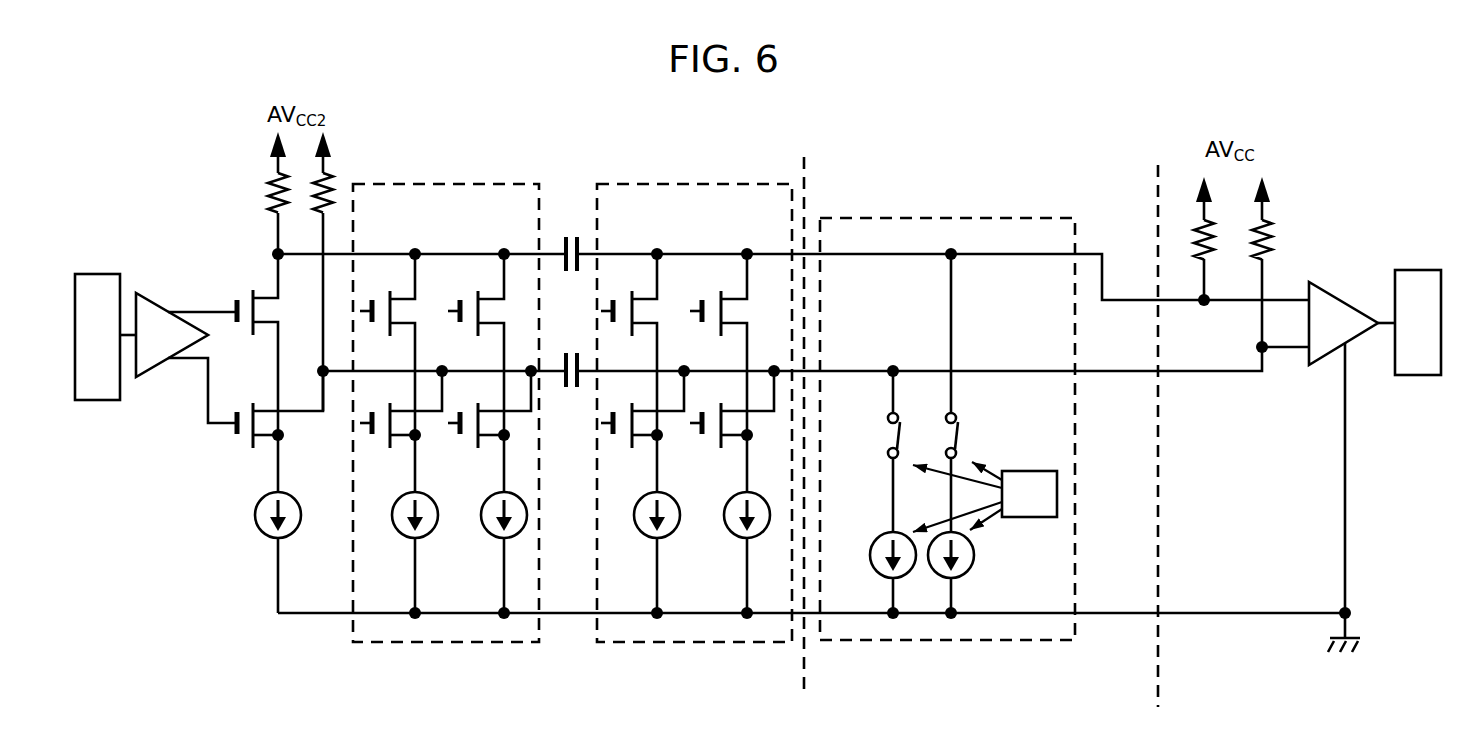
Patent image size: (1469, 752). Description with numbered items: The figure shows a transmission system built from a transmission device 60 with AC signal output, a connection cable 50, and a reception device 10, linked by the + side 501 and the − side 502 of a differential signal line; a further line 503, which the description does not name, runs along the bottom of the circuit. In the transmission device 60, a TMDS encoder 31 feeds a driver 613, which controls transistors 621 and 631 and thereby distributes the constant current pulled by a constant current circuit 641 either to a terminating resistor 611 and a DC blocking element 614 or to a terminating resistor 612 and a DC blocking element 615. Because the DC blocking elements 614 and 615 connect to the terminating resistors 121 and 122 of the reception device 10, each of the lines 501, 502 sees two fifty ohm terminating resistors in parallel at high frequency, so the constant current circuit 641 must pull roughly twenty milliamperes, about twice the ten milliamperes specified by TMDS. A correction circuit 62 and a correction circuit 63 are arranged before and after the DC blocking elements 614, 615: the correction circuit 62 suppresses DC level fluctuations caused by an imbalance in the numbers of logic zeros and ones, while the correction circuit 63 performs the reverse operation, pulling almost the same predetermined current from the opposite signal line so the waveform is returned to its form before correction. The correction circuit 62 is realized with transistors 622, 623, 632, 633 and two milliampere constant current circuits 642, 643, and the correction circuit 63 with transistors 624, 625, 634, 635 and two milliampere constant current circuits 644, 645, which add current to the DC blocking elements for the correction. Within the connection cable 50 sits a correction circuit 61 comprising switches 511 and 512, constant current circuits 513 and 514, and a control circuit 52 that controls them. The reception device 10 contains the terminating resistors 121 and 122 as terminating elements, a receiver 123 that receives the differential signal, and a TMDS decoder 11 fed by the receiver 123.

The TMDS decoder 11 is at (1424, 271).
The TMDS encoder 31 is at (93, 274).
The driver 613 is at (163, 362).
The terminating resistor 611 is at (267, 180).
The terminating resistor 612 is at (337, 163).
The transistor 621 is at (245, 290).
The transistor 631 is at (244, 449).
The constant current circuit 641 is at (259, 533).
The correction circuit 62 is at (455, 184).
The transistor 622 is at (382, 288).
The transistor 623 is at (470, 288).
The transistor 632 is at (382, 446).
The transistor 633 is at (464, 447).
The constant current circuit 642 is at (396, 534).
The constant current circuit 643 is at (488, 533).
The DC blocking element 614 is at (572, 233).
The DC blocking element 615 is at (572, 349).
The correction circuit 63 is at (678, 184).
The transistor 624 is at (622, 288).
The transistor 625 is at (712, 288).
The transistor 634 is at (624, 446).
The transistor 635 is at (707, 447).
The constant current circuit 644 is at (634, 533).
The constant current circuit 645 is at (731, 533).
The + side of the differential signal line 501 is at (1013, 257).
The − side of the differential signal line 502 is at (1010, 375).
The ground line 503 is at (1076, 611).
The correction circuit 61 is at (950, 218).
The switch 511 is at (958, 426).
The switch 512 is at (888, 437).
The constant current circuit 513 is at (985, 560).
The constant current circuit 514 is at (868, 549).
The control circuit 52 is at (985, 497).
The terminating resistor 121 is at (1188, 228).
The terminating resistor 122 is at (1286, 229).
The receiver 123 is at (1358, 347).
The transmission device 60 is at (790, 667).
The connection cable 50 is at (1144, 667).
The reception device 10 is at (1172, 667).